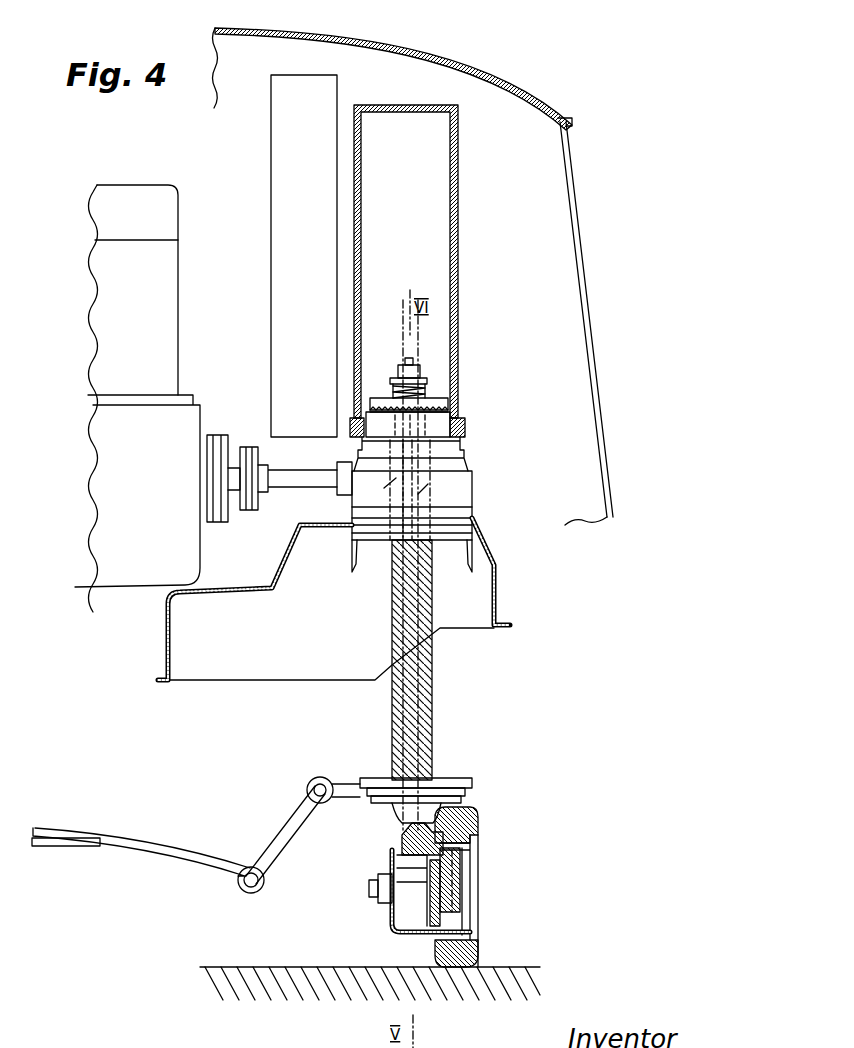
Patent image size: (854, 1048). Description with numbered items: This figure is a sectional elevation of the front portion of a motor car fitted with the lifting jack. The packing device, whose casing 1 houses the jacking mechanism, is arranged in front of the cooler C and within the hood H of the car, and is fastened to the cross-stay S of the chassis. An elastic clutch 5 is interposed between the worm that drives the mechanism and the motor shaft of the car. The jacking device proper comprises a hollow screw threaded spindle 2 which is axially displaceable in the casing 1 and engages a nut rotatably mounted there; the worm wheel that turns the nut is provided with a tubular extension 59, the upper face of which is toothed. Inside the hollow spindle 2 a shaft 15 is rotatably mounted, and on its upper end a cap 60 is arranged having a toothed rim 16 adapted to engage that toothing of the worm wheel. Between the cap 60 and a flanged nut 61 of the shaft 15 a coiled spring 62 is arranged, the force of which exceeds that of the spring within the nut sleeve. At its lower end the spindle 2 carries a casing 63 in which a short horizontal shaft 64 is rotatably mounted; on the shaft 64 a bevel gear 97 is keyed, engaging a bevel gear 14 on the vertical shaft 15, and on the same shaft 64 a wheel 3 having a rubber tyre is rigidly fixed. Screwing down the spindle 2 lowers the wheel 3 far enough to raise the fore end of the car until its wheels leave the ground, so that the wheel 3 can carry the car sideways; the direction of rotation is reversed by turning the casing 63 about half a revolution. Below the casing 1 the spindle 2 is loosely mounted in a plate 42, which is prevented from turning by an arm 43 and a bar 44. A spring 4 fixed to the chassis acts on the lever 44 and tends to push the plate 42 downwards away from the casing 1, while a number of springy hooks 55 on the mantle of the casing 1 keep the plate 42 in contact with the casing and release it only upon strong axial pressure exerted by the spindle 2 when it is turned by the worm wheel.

The hood H is at (478, 62).
The cooler C is at (271, 163).
The flanged nut 61 is at (395, 378).
The coiled spring 62 is at (393, 391).
The cap 60 is at (436, 400).
The toothed rim 16 is at (437, 410).
The tubular extension 59 is at (442, 427).
The casing 1 is at (462, 497).
The springy hooks 55 is at (350, 568).
The hollow screw threaded spindle 2 is at (432, 697).
The elastic clutch 5 is at (245, 447).
The cross-stay S is at (496, 585).
The plate 42 is at (466, 778).
The arm 43 is at (338, 781).
The bar 44 is at (283, 831).
The spring 4 is at (92, 828).
The shaft 15 is at (480, 828).
The wheel 3 is at (478, 950).
The bevel gear 14 is at (450, 862).
The casing 63 is at (404, 931).
The short horizontal shaft 64 is at (392, 906).
The bevel gear 97 is at (427, 930).